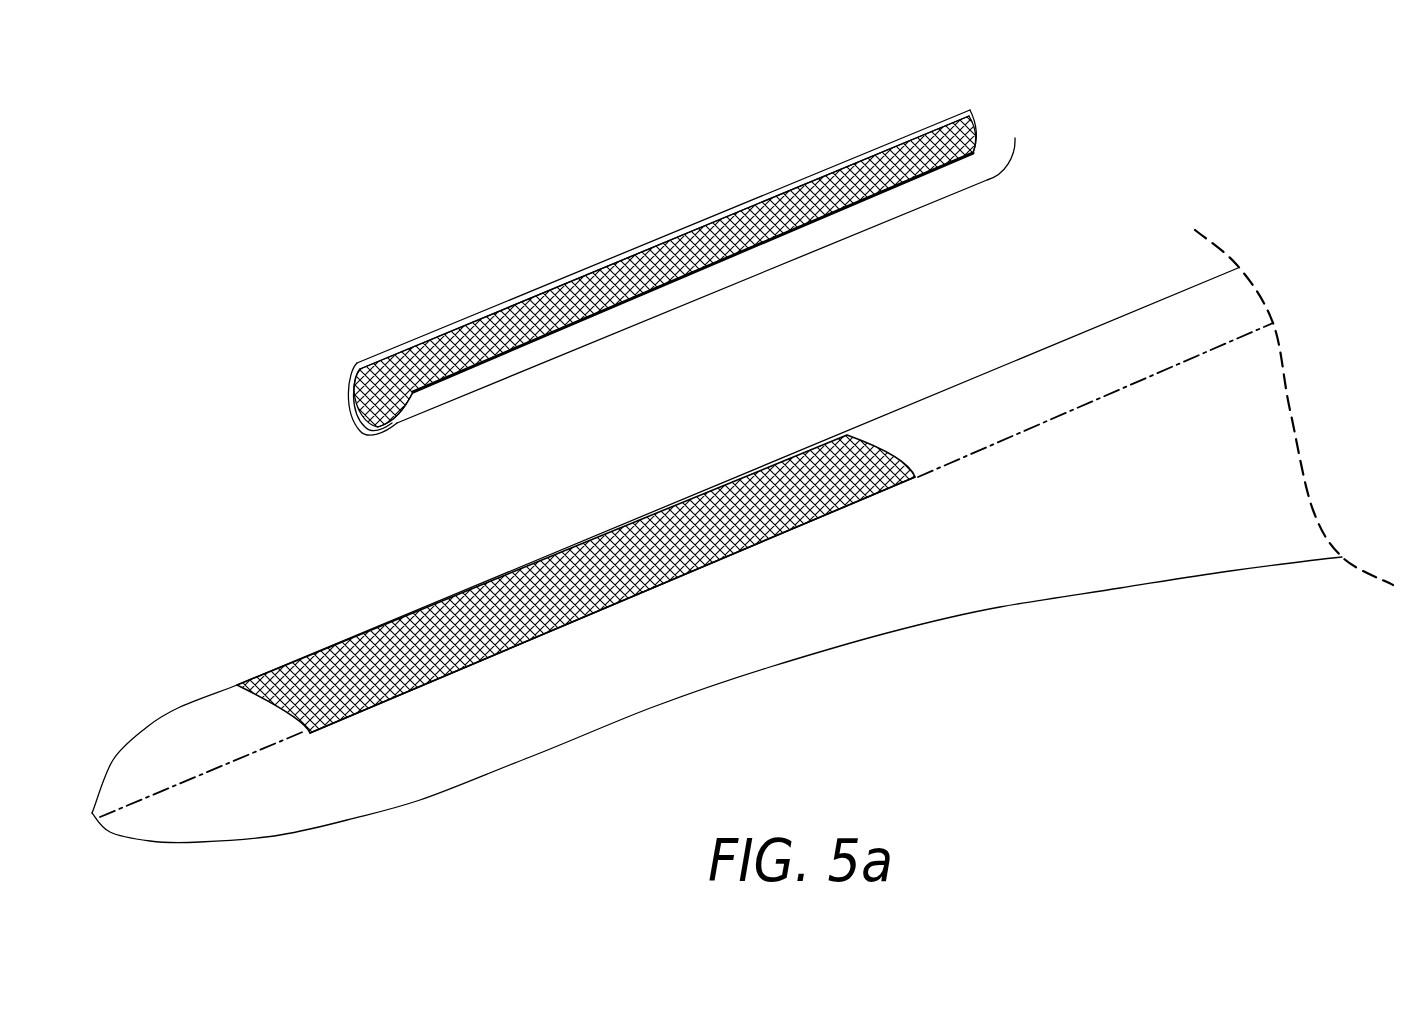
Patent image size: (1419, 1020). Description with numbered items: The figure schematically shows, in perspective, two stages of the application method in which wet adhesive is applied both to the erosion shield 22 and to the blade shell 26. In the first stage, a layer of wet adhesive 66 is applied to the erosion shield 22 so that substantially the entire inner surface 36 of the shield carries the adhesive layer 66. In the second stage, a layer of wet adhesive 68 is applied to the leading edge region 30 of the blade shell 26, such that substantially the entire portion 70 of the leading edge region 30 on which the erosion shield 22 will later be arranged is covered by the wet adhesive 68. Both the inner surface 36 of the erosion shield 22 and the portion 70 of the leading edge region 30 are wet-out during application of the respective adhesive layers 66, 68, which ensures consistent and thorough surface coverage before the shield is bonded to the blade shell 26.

The erosion shield 22 is at (604, 232).
The wet adhesive 66 is at (897, 140).
The inner surface 36 is at (350, 393).
The blade shell 26 is at (990, 596).
The leading edge region 30 is at (1058, 365).
The wet adhesive 68 is at (762, 470).
The portion 70 is at (612, 630).